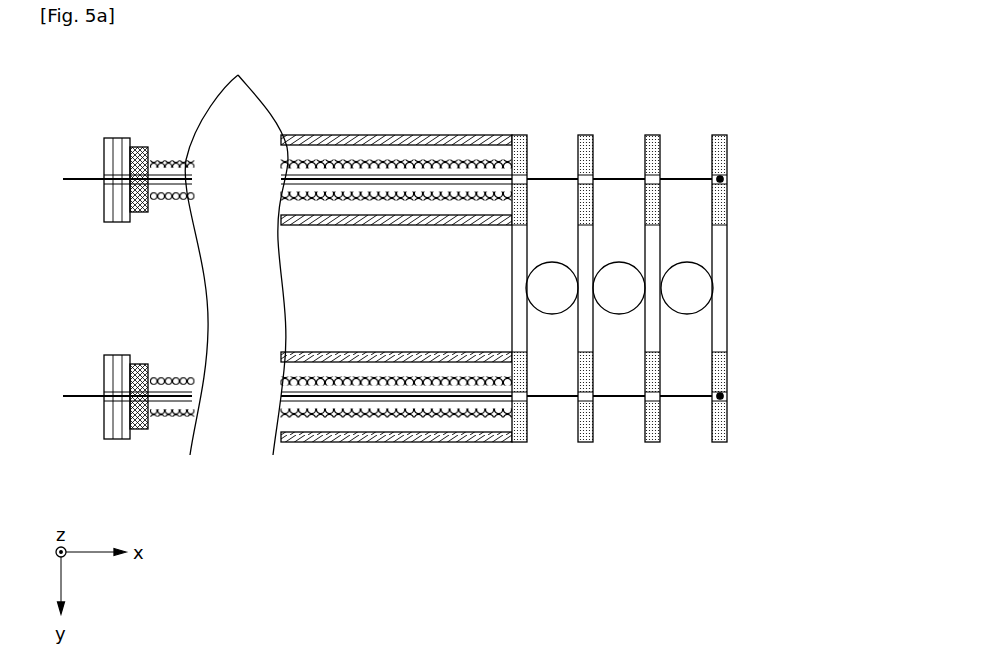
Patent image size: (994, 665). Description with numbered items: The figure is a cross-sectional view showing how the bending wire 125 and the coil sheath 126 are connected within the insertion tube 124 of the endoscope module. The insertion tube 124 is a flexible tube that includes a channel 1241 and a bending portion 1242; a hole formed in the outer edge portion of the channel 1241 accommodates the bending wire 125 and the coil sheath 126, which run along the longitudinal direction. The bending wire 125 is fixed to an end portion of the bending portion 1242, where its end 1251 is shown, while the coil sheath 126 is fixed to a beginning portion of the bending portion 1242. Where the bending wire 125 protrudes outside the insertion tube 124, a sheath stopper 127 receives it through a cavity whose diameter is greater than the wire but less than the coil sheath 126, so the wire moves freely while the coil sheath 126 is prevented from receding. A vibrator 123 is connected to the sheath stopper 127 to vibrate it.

The vibrator 123 is at (115, 215).
The insertion tube 124 is at (546, 243).
The bending wire 125 is at (82, 178).
The coil sheath 126 is at (215, 118).
The sheath stopper 127 is at (140, 212).
The channel 1241 is at (360, 293).
The bending portion 1242 is at (728, 125).
The wire end point 1251 is at (722, 177).